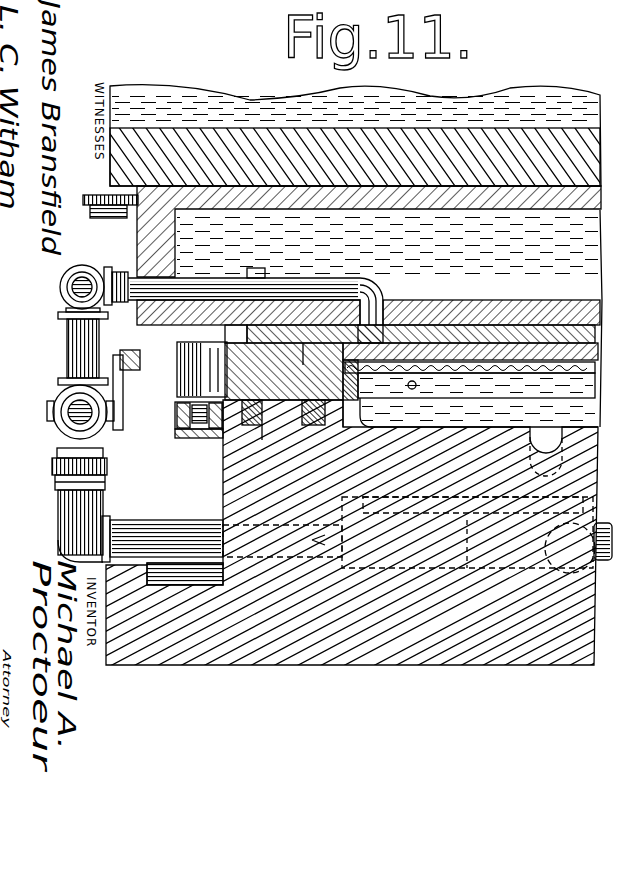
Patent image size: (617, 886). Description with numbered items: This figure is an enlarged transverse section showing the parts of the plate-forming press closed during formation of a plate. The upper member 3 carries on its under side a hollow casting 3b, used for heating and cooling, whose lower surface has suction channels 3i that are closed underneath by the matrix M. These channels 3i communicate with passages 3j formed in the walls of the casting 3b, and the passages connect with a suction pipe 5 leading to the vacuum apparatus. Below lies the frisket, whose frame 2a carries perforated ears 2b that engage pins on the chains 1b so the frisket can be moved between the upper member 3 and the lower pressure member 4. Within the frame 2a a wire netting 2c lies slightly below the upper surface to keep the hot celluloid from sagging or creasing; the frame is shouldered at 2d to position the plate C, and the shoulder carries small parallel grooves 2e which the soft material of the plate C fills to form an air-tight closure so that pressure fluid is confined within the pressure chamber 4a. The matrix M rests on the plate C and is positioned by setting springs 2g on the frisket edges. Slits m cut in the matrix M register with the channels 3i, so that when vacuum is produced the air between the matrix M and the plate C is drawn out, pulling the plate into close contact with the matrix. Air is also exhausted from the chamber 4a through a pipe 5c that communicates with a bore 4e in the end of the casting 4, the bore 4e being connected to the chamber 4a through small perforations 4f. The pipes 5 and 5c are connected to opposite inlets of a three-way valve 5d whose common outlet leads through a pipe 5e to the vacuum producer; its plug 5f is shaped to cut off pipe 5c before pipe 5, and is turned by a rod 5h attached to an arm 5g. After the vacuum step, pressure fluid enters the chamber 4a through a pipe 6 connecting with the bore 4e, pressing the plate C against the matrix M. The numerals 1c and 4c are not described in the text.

The upper member 3 is at (346, 137).
The hollow casting 3b is at (387, 244).
The suction channels 3i is at (374, 303).
The passages 3j is at (292, 278).
The slits m is at (389, 328).
The matrix M is at (483, 335).
The setting springs 2g is at (218, 302).
The frisket frame 2a is at (243, 340).
The perforated ears 2b is at (181, 362).
The wire netting 2c is at (476, 385).
The shoulder 2d is at (254, 403).
The grooves 2e is at (312, 404).
The plate C is at (463, 347).
The chains 1b is at (178, 414).
The bushing bottom 1c is at (178, 437).
The lower pressure member 4 is at (308, 540).
The pressure chamber 4a is at (460, 410).
The recess 4c is at (257, 425).
The bore 4e is at (467, 570).
The small perforations 4f is at (452, 513).
The suction pipe 5 is at (78, 275).
The pipe 5c is at (70, 467).
The three-way valve 5d is at (85, 442).
The pipe 5e is at (58, 402).
The plug 5f is at (62, 425).
The arm 5g is at (120, 388).
The rod 5h is at (135, 358).
The pipe 6 is at (556, 572).